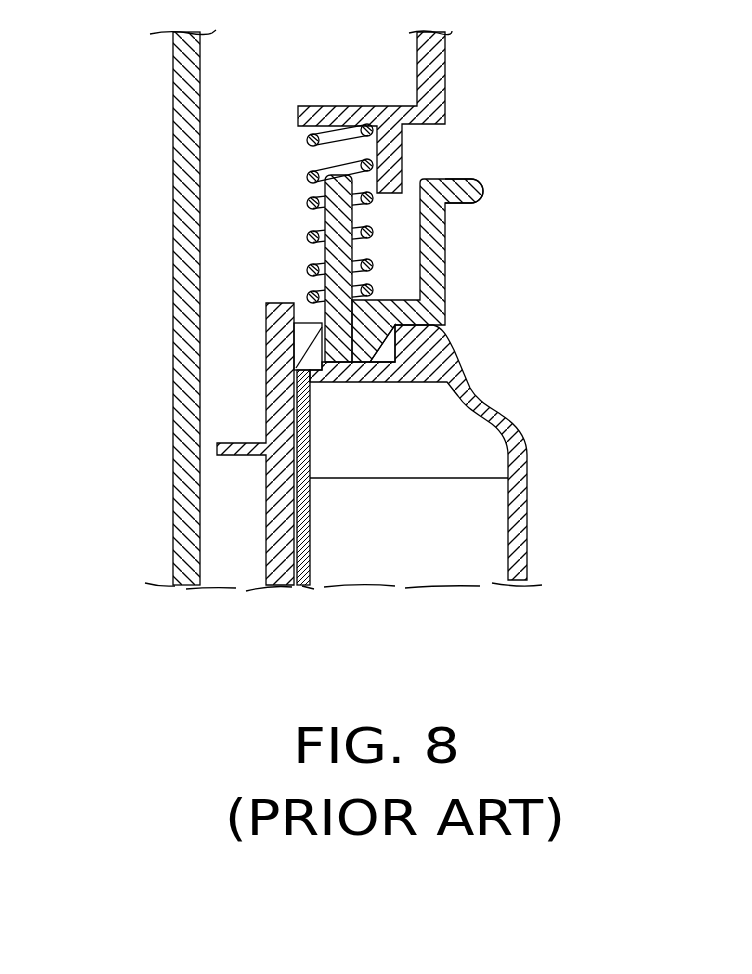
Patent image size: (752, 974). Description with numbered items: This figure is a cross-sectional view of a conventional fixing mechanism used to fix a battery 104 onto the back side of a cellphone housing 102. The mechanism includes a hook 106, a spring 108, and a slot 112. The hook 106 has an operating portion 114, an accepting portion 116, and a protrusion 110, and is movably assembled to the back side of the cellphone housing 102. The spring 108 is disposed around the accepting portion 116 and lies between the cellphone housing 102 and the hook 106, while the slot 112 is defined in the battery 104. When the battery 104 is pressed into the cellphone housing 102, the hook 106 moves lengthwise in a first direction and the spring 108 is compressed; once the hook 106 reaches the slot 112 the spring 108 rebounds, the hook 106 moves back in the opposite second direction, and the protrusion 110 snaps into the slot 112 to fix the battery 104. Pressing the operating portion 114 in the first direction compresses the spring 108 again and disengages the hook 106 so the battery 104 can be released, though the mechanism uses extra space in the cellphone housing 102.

The cellphone housing 102 is at (437, 64).
The battery 104 is at (515, 487).
The hook 106 is at (463, 255).
The spring 108 is at (307, 175).
The protrusion 110 is at (343, 347).
The slot 112 is at (378, 353).
The operating portion 114 is at (475, 187).
The accepting portion 116 is at (325, 219).